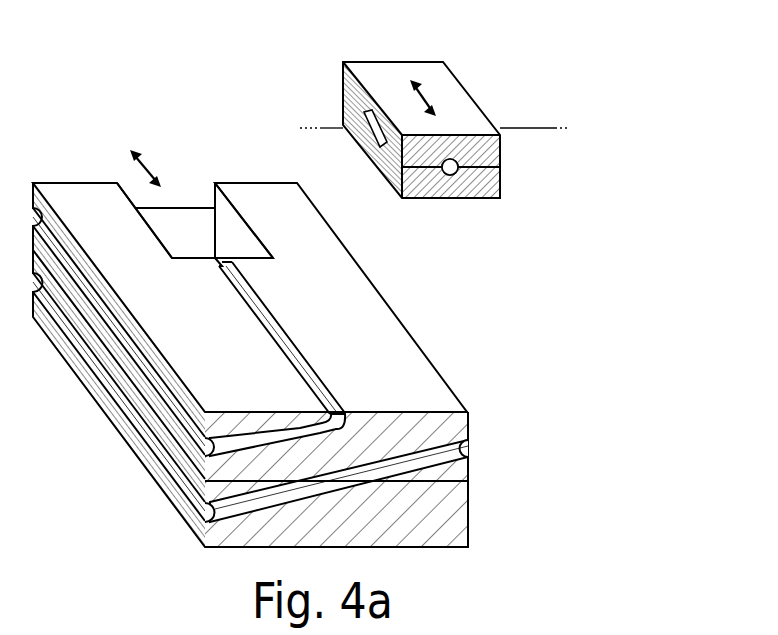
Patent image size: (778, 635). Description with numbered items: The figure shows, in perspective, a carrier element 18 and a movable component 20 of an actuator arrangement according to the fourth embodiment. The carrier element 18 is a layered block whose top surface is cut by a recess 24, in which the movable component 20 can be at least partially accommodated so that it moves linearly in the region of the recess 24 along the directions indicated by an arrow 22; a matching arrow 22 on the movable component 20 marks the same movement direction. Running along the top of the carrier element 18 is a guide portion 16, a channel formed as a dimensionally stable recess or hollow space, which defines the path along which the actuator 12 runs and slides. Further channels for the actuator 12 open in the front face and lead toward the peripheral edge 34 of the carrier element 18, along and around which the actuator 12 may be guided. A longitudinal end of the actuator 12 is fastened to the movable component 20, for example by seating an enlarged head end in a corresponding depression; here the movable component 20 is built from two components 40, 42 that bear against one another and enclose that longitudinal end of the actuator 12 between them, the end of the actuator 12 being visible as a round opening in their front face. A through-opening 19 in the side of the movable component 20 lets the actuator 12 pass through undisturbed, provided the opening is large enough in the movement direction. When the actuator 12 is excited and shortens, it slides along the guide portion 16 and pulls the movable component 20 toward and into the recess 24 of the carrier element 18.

The actuator 12 is at (193, 207).
The guide portion 16 is at (263, 298).
The carrier element 18 is at (403, 355).
The through-opening 19 is at (375, 142).
The movable component 20 is at (378, 73).
The arrow 22 is at (153, 170).
The recess 24 is at (135, 195).
The edge 34 is at (468, 466).
The first component of movable component 40 is at (500, 145).
The second component of movable component 42 is at (500, 178).